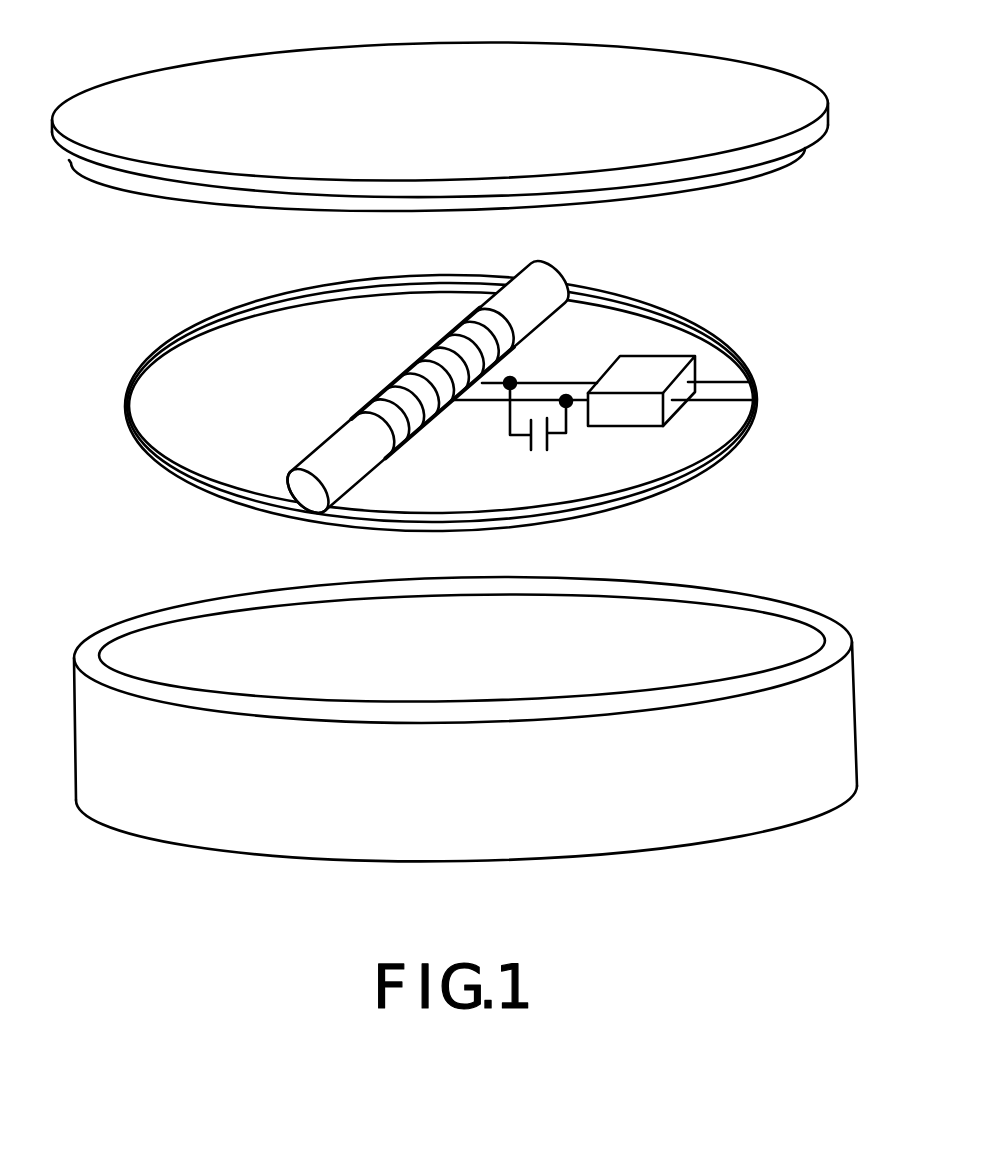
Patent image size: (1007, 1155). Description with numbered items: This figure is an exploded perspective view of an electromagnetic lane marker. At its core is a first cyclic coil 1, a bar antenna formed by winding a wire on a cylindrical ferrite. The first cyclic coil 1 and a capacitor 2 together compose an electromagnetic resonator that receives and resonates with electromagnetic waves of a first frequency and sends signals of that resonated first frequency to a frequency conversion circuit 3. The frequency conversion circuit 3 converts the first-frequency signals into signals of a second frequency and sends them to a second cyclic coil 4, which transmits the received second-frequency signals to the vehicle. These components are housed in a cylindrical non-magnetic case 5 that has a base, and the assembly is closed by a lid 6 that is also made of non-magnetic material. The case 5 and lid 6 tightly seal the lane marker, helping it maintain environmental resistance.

The first cyclic coil 1 is at (387, 392).
The capacitor 2 is at (549, 445).
The frequency conversion circuit 3 is at (653, 367).
The second cyclic coil 4 is at (743, 350).
The cylindrical non-magnetic case 5 is at (838, 712).
The lid 6 is at (773, 95).